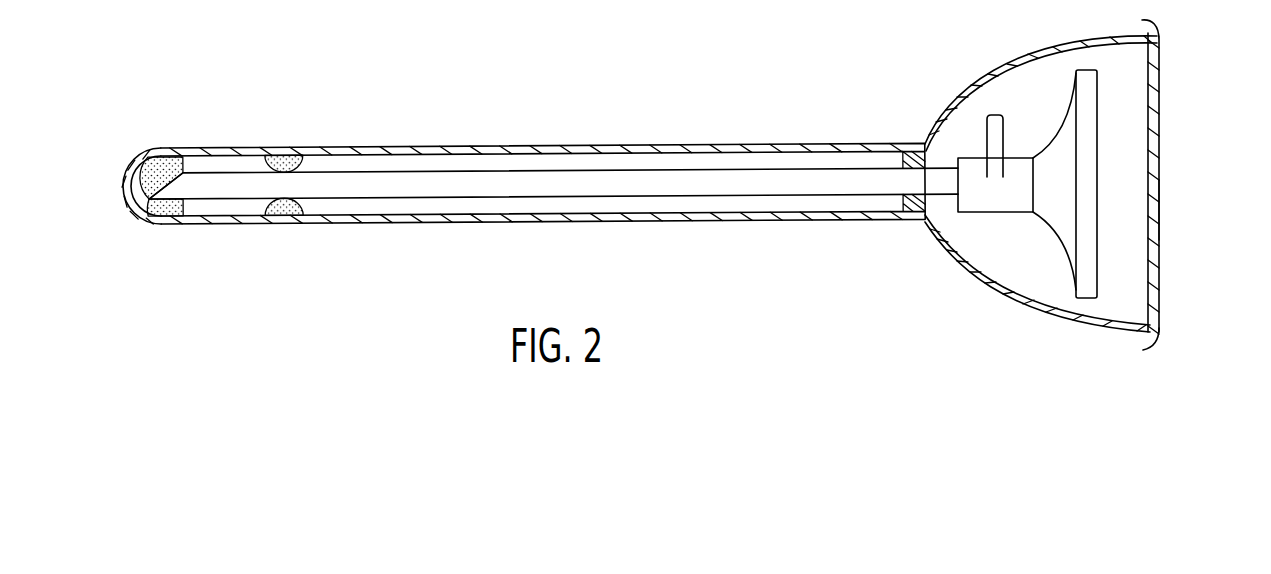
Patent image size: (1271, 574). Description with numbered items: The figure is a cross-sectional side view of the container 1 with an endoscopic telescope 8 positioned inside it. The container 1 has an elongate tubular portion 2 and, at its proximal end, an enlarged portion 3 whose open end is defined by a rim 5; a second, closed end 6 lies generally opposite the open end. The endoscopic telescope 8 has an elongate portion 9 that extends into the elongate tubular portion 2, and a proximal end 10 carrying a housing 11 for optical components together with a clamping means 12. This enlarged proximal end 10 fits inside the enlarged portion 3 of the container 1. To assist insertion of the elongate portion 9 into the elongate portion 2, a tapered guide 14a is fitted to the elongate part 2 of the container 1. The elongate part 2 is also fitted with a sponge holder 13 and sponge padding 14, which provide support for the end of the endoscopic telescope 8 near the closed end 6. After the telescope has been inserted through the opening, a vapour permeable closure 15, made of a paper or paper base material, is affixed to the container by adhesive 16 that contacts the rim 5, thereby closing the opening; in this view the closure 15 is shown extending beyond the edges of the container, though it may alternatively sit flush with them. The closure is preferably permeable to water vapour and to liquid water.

The container 1 is at (794, 128).
The elongate tubular portion 2 is at (478, 148).
The enlarged portion 3 is at (1012, 58).
The rim 5 is at (1152, 48).
The closed end 6 is at (123, 178).
The endoscopic telescope 8 is at (1104, 148).
The elongate portion 9 is at (383, 190).
The proximal end 10 is at (1020, 255).
The housing 11 is at (1058, 145).
The clamping means 12 is at (987, 125).
The sponge holder 13 is at (906, 226).
The sponge padding 14 is at (160, 168).
The tapered guide 14a is at (282, 162).
The vapour permeable closure 15 is at (1163, 212).
The adhesive 16 is at (1158, 312).